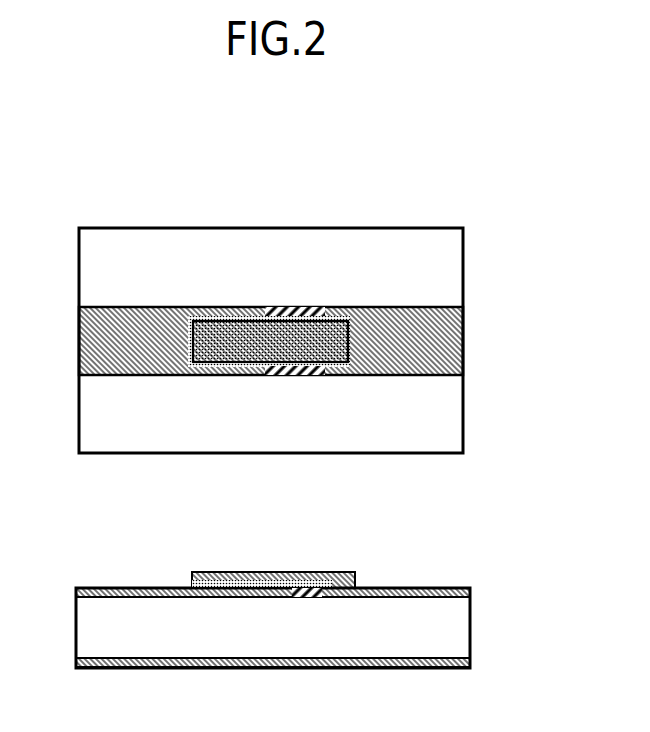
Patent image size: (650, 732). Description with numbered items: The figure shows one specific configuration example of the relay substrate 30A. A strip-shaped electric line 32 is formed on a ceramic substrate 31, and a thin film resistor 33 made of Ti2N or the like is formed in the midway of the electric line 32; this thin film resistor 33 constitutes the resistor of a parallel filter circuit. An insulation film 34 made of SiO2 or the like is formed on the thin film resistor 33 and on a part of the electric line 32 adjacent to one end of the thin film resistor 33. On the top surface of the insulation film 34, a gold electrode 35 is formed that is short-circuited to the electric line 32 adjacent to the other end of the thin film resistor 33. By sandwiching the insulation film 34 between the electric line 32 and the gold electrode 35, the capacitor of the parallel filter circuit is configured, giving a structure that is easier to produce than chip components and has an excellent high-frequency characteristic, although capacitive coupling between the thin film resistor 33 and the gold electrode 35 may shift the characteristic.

The relay substrate 30A is at (100, 196).
The ceramic substrate 31 is at (450, 274).
The electric line 32 is at (72, 365).
The thin film resistor 33 is at (291, 368).
The insulation film 34 is at (164, 368).
The gold electrode 35 is at (350, 343).